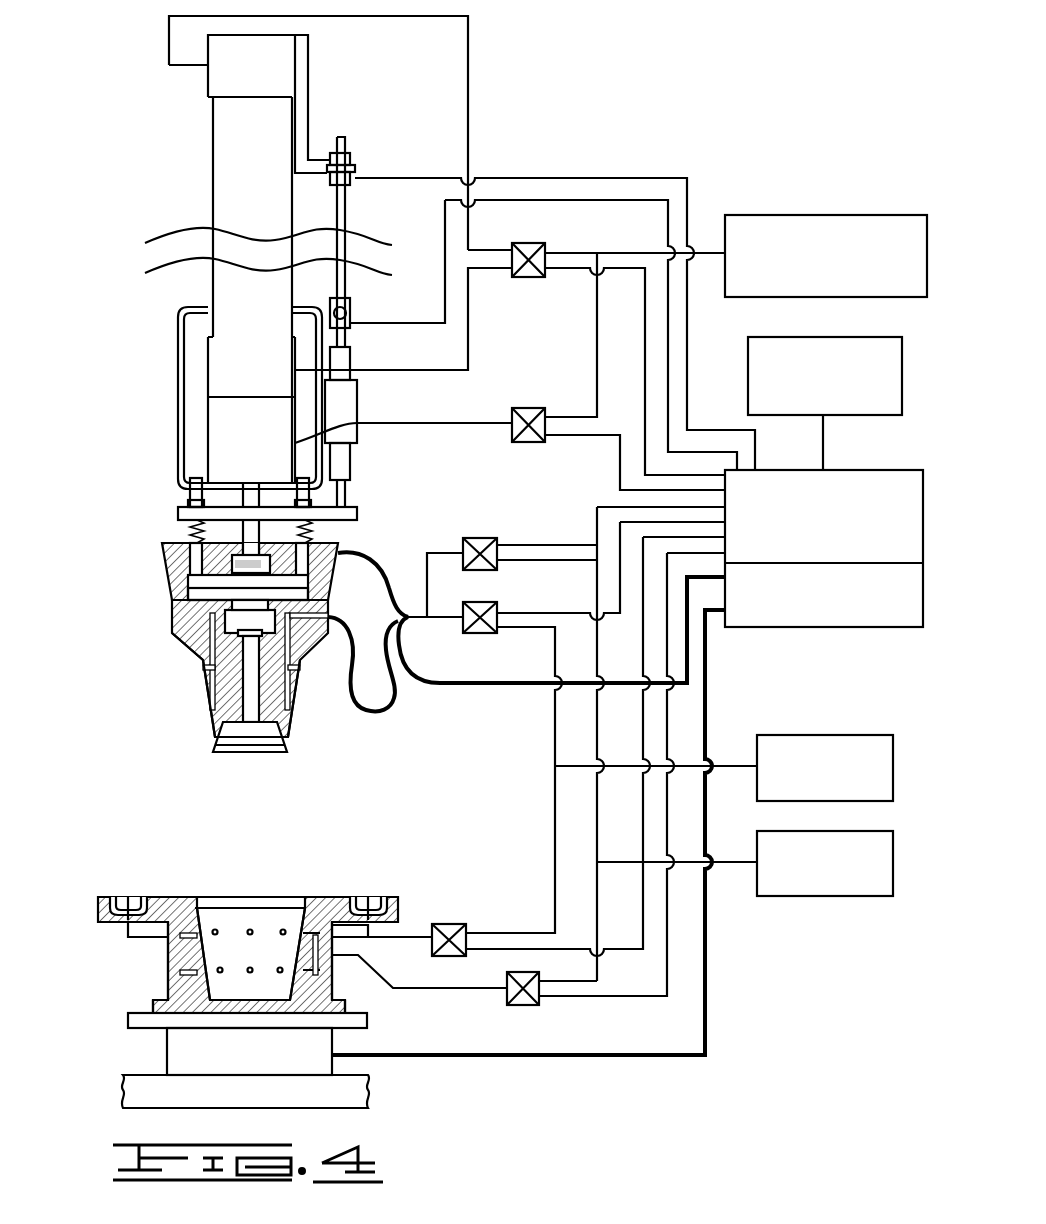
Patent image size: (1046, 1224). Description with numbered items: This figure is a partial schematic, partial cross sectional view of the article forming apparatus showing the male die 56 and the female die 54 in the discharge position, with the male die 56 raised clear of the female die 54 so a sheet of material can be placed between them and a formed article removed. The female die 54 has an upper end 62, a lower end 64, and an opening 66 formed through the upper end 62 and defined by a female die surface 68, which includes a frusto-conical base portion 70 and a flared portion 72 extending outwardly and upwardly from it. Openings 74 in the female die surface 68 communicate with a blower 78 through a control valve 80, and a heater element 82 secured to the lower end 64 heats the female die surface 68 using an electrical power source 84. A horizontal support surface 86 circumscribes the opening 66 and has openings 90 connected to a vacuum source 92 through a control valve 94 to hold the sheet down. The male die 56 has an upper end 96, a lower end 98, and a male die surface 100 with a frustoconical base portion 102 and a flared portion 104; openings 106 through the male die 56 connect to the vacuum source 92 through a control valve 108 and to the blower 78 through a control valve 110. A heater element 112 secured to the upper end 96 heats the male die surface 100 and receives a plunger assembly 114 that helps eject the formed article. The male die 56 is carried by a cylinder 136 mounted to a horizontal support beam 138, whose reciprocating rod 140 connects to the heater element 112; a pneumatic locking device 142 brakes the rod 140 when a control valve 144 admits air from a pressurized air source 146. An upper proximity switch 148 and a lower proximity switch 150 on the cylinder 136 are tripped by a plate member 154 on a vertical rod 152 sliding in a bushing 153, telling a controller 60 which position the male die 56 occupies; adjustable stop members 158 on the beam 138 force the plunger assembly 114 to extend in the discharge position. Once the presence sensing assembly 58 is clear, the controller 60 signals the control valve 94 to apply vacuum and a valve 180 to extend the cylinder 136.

The female die 54 is at (337, 897).
The male die 56 is at (172, 617).
The presence sensing assembly 58 is at (836, 337).
The controller 60 is at (862, 470).
The upper end 62 is at (161, 895).
The lower end 64 is at (345, 1002).
The opening 66 is at (303, 900).
The female die surface 68 is at (207, 947).
The base portion 70 is at (225, 960).
The flared portion 72 is at (200, 940).
The openings 74 is at (240, 973).
The blower 78 is at (840, 896).
The control valve 80 is at (525, 1005).
The heater element 82 is at (167, 1053).
The electrical power source 84 is at (833, 627).
The horizontal support surface 86 is at (155, 897).
The openings 90 is at (110, 897).
The vacuum source 92 is at (838, 735).
The control valve 94 is at (448, 924).
The upper end 96 is at (188, 588).
The lower end 98 is at (215, 735).
The male die surface 100 is at (208, 685).
The base portion 102 is at (212, 717).
The flared portion 104 is at (185, 645).
The openings 106 is at (303, 667).
The control valve 108 is at (485, 633).
The control valve 110 is at (483, 538).
The heater element 112 is at (165, 553).
The plunger assembly 114 is at (270, 755).
The cylinder 136 is at (213, 165).
The horizontal support beam 138 is at (178, 373).
The reciprocating rod 140 is at (247, 530).
The locking device 142 is at (208, 430).
The control valve 144 is at (530, 408).
The pressurized air source 146 is at (820, 215).
The upper proximity switch 148 is at (355, 160).
The lower proximity switch 150 is at (352, 305).
The vertical rod 152 is at (348, 207).
The bushing 153 is at (357, 398).
The plate member 154 is at (357, 170).
The adjustable stop members 158 is at (190, 495).
The valve 180 is at (530, 243).